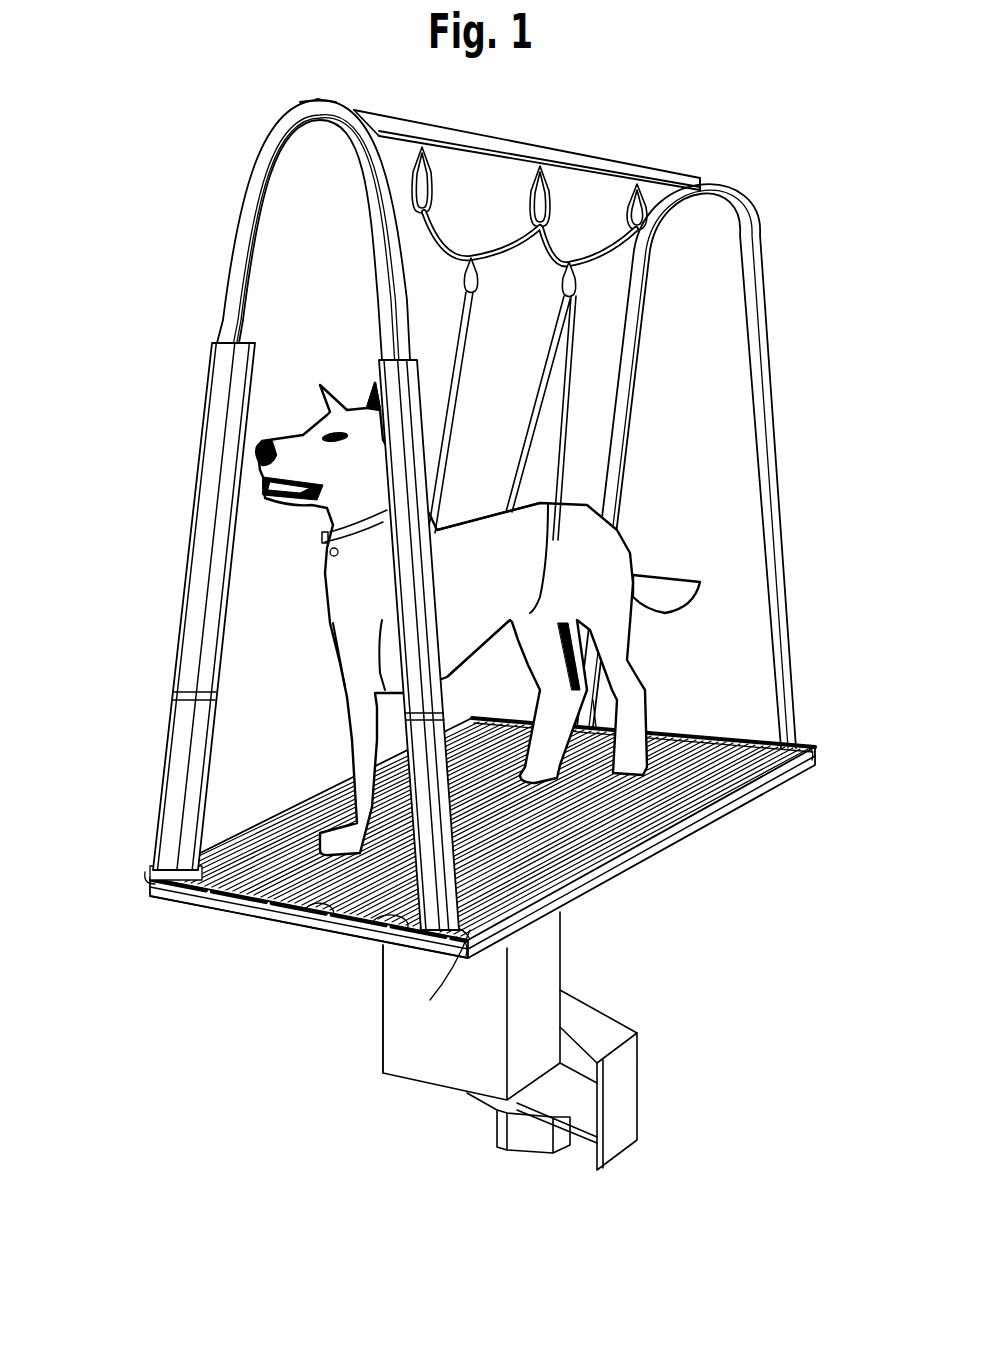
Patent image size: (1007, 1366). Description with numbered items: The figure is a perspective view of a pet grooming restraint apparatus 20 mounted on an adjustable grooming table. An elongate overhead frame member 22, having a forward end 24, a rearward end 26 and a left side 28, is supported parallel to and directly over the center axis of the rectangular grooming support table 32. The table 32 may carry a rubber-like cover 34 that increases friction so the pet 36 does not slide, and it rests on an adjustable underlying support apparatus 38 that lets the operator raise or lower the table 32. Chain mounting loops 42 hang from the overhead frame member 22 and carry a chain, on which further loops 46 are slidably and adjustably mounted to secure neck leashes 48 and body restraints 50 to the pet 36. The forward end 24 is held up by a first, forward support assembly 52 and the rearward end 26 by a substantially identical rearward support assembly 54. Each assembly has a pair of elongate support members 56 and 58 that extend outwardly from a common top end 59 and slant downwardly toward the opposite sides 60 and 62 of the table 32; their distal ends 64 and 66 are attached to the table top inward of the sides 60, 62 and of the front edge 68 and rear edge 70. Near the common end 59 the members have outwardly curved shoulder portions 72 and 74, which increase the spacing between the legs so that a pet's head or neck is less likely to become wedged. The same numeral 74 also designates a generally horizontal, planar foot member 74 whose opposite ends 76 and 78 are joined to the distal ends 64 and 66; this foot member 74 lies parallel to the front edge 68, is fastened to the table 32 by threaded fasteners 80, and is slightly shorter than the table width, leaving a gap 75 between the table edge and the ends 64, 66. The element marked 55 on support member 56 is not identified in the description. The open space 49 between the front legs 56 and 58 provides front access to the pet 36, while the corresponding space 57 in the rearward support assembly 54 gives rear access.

The pet grooming restraint apparatus 20 is at (203, 137).
The overhead frame member 22 is at (563, 123).
The forward end 24 is at (350, 110).
The rearward end 26 is at (700, 181).
The left side 28 is at (496, 138).
The grooming support table 32 is at (658, 857).
The rubber-like cover 34 is at (740, 737).
The pet 36 is at (475, 533).
The adjustable underlying support apparatus 38 is at (545, 983).
The chain mounting loops 42 is at (527, 193).
The loops 46 is at (485, 276).
The neck leash 48 is at (458, 364).
The body restraint 50 is at (520, 433).
The front access space 49 is at (250, 552).
The forward support assembly 52 is at (196, 594).
The rearward support assembly 54 is at (776, 420).
The sleeve 55 is at (212, 455).
The support member 56 is at (230, 282).
The rear access space 57 is at (688, 545).
The support member 58 is at (375, 300).
The common end 59 is at (322, 99).
The side of table 60 is at (305, 807).
The side of table 62 is at (597, 893).
The distal end 64 is at (163, 868).
The distal end 66 is at (427, 930).
The front edge 68 is at (233, 908).
The rear edge 70 is at (680, 728).
The curved shoulder portion 72 is at (281, 196).
The foot member 74 is at (373, 920).
The gap 75 is at (815, 747).
The end of foot member 76 is at (140, 875).
The end of foot member 78 is at (430, 1000).
The threaded fasteners 80 is at (300, 907).